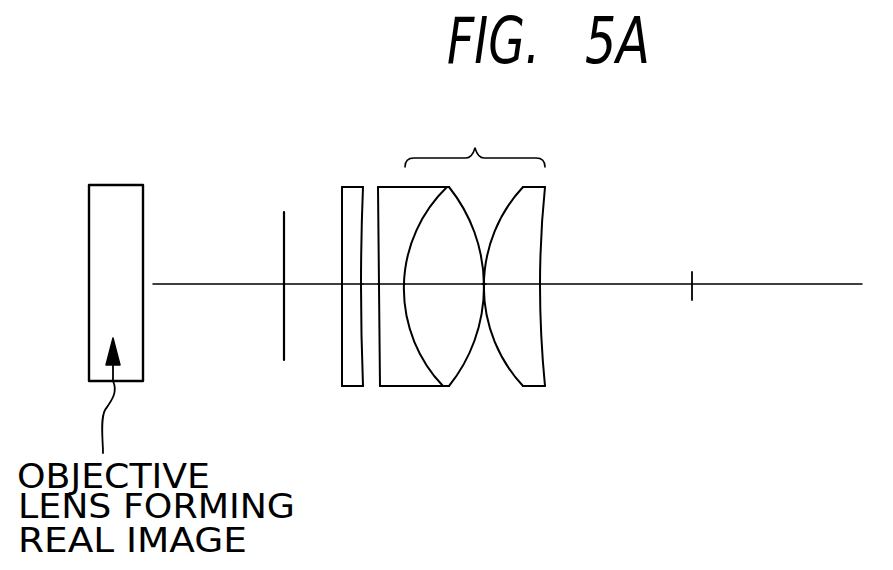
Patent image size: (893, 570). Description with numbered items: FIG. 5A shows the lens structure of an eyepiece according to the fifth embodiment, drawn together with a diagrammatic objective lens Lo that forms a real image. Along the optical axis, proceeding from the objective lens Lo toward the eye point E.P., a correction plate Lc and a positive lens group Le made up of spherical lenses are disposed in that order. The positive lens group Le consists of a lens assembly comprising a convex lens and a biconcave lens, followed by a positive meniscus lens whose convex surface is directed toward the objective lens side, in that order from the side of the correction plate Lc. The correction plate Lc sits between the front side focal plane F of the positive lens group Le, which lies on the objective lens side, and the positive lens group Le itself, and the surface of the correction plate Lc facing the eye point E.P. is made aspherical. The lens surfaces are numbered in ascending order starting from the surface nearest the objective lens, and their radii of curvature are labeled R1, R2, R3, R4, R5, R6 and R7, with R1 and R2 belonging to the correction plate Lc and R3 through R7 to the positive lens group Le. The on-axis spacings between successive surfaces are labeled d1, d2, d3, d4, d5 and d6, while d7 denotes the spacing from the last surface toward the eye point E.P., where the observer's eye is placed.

The objective lens Lo is at (114, 200).
The front side focal plane F is at (284, 330).
The correction plate Lc is at (319, 282).
The positive lens group Le is at (512, 283).
The radius of curvature of the first surface R1 is at (340, 372).
The radius of curvature of the second surface R2 is at (362, 373).
The radius of curvature of the third surface R3 is at (382, 372).
The radius of curvature of the fourth surface R4 is at (428, 373).
The radius of curvature of the fifth surface R5 is at (462, 371).
The radius of curvature of the sixth surface R6 is at (523, 381).
The radius of curvature of the seventh surface R7 is at (545, 373).
The spacing between the first and second surfaces d1 is at (353, 285).
The spacing between the second and third surfaces d2 is at (372, 288).
The spacing between the third and fourth surfaces d3 is at (397, 285).
The spacing between the fourth and fifth surfaces d4 is at (444, 268).
The spacing between the fifth and sixth surfaces d5 is at (485, 288).
The spacing between the sixth and seventh surfaces d6 is at (512, 268).
The spacing between the seventh surface and the eye point d7 is at (616, 267).
The eye point E.P. is at (694, 270).